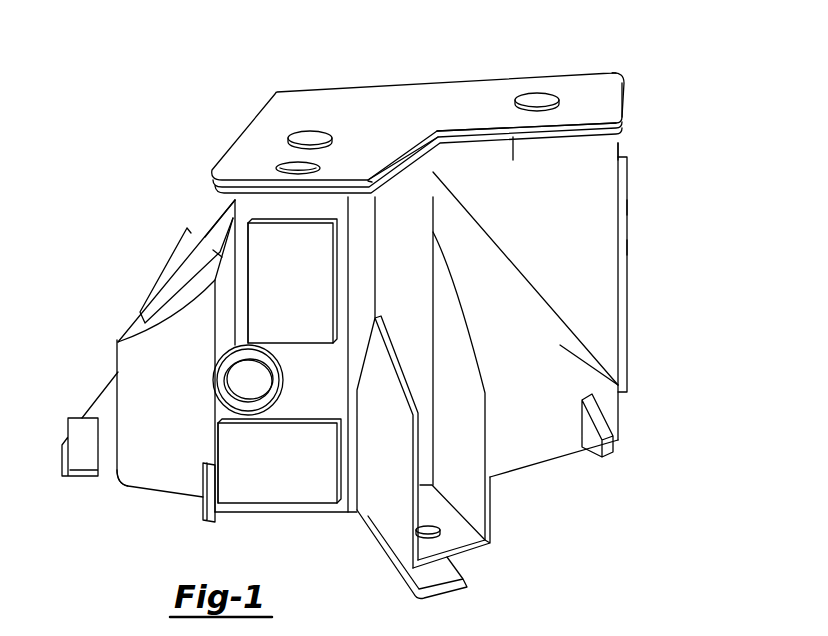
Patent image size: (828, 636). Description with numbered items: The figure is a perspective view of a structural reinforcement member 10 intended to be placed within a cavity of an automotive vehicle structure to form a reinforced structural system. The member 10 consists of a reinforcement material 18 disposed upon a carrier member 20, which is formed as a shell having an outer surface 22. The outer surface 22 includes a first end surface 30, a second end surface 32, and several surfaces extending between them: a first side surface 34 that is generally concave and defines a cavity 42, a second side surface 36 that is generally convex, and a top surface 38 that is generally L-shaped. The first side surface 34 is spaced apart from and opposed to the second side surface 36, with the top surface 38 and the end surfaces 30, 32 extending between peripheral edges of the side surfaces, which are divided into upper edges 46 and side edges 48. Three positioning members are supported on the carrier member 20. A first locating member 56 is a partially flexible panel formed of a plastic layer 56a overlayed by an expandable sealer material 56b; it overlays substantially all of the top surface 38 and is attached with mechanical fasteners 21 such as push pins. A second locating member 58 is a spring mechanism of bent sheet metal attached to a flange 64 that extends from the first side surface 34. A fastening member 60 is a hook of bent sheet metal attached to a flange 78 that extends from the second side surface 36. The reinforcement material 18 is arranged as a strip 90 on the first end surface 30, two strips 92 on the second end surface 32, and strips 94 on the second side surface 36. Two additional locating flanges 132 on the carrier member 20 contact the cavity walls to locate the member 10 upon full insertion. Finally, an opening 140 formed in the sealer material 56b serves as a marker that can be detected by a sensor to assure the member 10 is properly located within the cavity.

The structural reinforcement member 10 is at (409, 68).
The reinforcement material 18 is at (627, 207).
The carrier member 20 is at (537, 404).
The mechanical fasteners 21 is at (300, 134).
The outer surface 22 is at (560, 347).
The first end surface 30 is at (618, 143).
The second end surface 32 is at (306, 393).
The first side surface 34 is at (487, 313).
The second side surface 36 is at (148, 292).
The top surface 38 is at (480, 127).
The cavity 42 is at (537, 254).
The upper edges 46 is at (513, 142).
The side edges 48 is at (625, 98).
The first locating member 56 is at (290, 97).
The plastic layer 56a is at (352, 198).
The expandable sealer material 56b is at (340, 152).
The second locating member 58 is at (486, 567).
The fastening member 60 is at (84, 500).
The flange 64 is at (484, 498).
The flange 78 is at (108, 400).
The strip 90 is at (622, 248).
The strips 92 is at (293, 322).
The strips 94 is at (212, 222).
The flanges 132 is at (205, 517).
The opening 140 is at (290, 163).